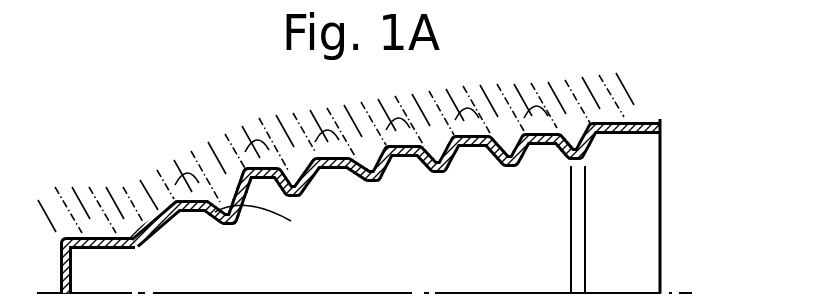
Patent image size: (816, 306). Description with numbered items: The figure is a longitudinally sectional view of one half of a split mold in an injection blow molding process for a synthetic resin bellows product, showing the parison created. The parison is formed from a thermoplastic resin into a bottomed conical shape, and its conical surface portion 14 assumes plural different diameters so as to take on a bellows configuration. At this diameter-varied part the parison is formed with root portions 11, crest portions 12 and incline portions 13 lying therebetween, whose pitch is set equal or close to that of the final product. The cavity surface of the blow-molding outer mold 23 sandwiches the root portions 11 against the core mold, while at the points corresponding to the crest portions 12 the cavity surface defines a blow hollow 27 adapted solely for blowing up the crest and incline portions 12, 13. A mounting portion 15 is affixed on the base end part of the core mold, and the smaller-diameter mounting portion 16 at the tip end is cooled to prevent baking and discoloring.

The root portion 11 is at (228, 224).
The crest portion 12 is at (288, 190).
The incline portion 13 is at (267, 223).
The conical surface portion 14 is at (568, 167).
The mounting portion 15 is at (641, 120).
The mounting portion 16 is at (104, 237).
The blow-molding outer mold 23 is at (222, 168).
The blow hollow 27 is at (324, 128).